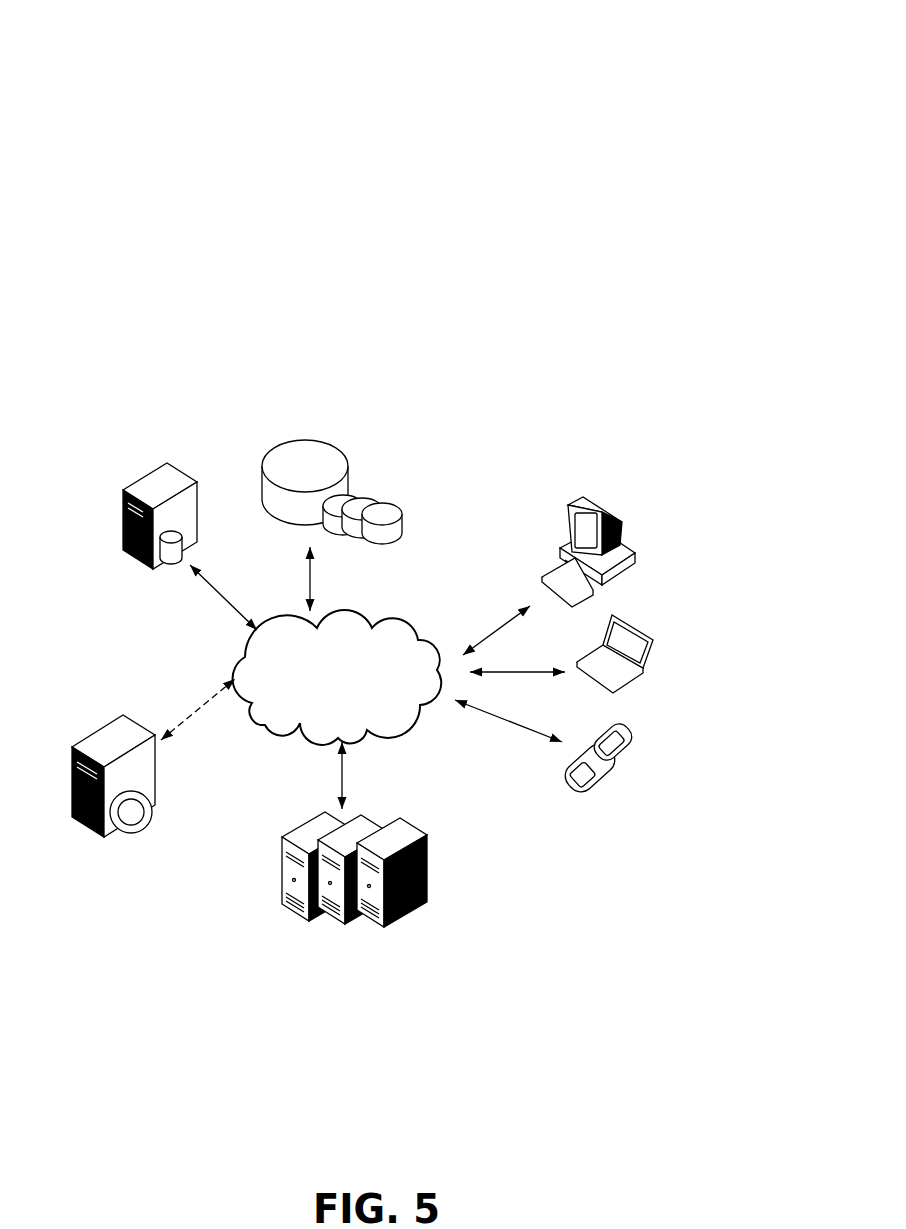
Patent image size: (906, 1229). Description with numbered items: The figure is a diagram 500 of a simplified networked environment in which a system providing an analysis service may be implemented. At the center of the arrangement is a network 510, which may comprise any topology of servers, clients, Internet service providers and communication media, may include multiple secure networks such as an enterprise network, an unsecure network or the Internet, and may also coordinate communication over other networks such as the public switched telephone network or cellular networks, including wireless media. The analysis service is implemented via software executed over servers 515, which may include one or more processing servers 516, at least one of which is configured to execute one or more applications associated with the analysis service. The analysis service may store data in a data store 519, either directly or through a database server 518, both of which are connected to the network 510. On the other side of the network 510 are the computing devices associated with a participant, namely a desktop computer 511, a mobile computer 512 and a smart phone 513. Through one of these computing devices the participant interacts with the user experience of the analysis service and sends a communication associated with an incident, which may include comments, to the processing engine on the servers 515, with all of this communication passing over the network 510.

The diagram 500 is at (702, 60).
The network 510 is at (346, 600).
The desktop computer 511 is at (623, 492).
The mobile computer 512 is at (653, 616).
The smart phone 513 is at (626, 724).
The servers 515 is at (308, 817).
The processing servers 516 is at (92, 724).
The database server 518 is at (161, 578).
The data store 519 is at (320, 418).